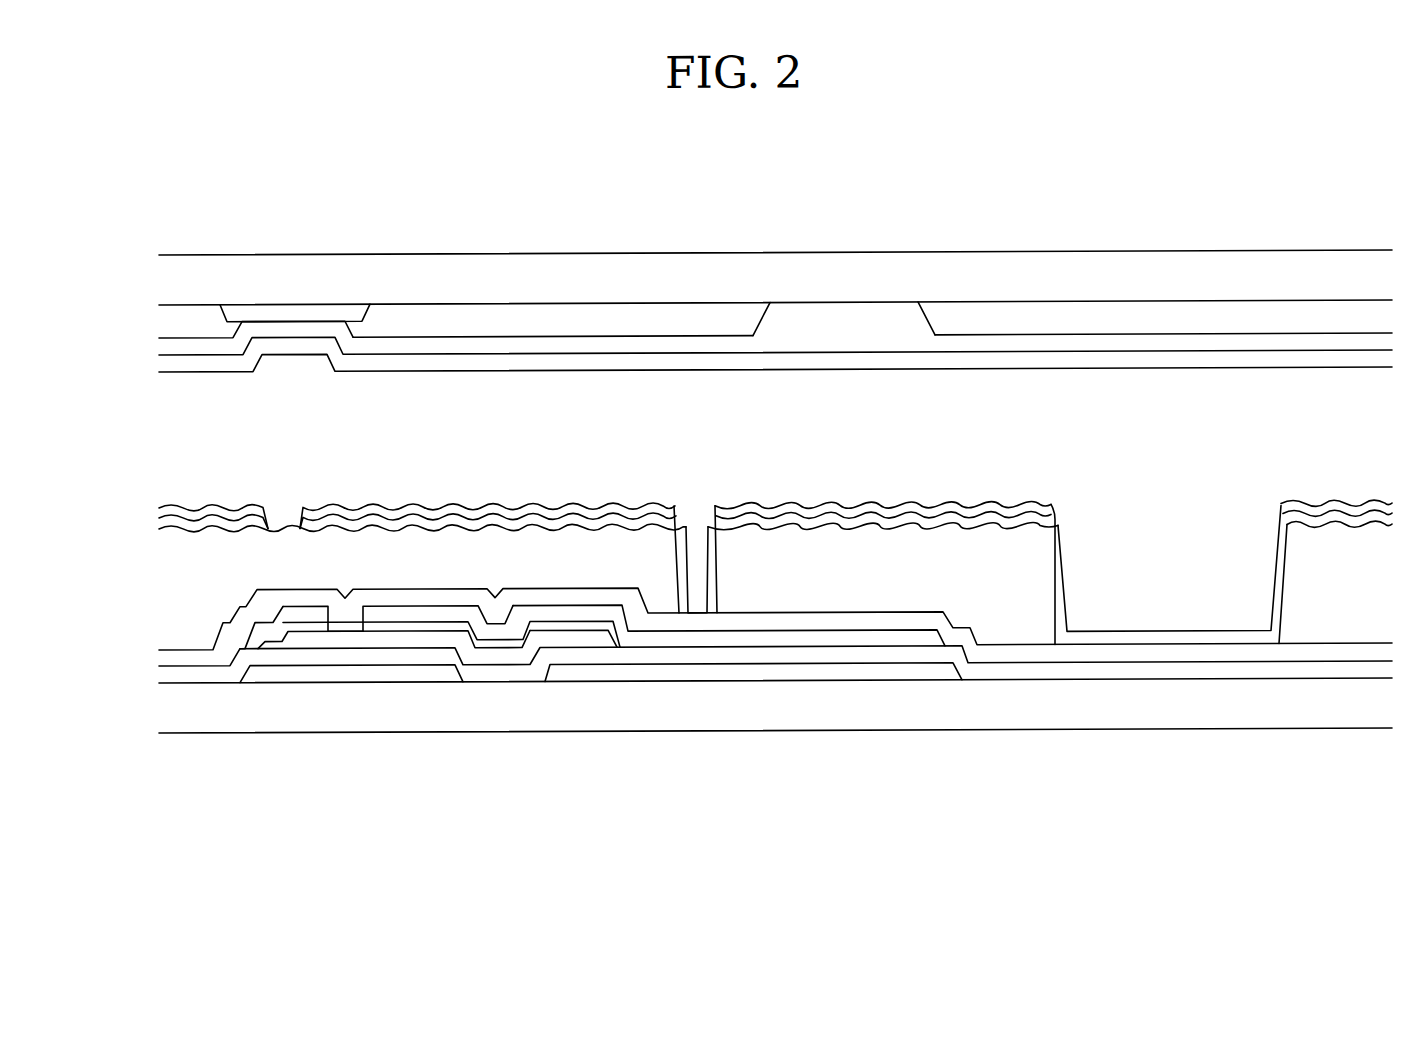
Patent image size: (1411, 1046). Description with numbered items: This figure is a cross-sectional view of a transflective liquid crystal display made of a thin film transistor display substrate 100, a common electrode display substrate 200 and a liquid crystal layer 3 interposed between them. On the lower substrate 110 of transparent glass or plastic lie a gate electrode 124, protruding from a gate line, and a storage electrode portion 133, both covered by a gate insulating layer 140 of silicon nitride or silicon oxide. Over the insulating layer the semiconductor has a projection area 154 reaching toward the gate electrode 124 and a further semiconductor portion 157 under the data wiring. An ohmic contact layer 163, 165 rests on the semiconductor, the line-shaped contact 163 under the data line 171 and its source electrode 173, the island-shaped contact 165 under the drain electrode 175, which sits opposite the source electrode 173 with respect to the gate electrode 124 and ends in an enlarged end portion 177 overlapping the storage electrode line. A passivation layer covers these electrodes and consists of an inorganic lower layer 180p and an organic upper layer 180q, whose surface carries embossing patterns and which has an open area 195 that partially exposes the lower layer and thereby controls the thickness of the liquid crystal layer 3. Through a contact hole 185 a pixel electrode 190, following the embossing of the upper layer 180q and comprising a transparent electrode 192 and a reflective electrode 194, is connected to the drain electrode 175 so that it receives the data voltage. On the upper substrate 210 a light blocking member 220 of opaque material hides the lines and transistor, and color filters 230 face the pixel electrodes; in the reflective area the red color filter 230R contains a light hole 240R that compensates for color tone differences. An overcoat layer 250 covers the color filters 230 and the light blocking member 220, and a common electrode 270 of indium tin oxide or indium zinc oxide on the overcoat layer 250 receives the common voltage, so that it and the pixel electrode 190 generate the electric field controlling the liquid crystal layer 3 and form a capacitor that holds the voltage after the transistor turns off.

The liquid crystal layer 3 is at (143, 380).
The thin film transistor display substrate 100 is at (143, 512).
The substrate 110 is at (1100, 722).
The gate electrode 124 is at (361, 678).
The storage electrode line 133 is at (867, 675).
The gate insulating layer 140 is at (993, 677).
The projection area 154 is at (337, 646).
The semiconductor stripe 157 is at (598, 647).
The ohmic contact layer 163 is at (283, 641).
The ohmic contact layer 165 is at (397, 631).
The data line 171 is at (237, 661).
The source electrode 173 is at (303, 621).
The drain electrode 175 is at (413, 618).
The enlarged end portion 177 is at (777, 643).
The lower layer 180p is at (293, 597).
The upper layer 180q is at (219, 557).
The contact hole 185 is at (693, 528).
The pixel electrode 190 is at (775, 465).
The transparent electrode 192 is at (592, 518).
The reflective electrode 194 is at (639, 518).
The open area 195 is at (1157, 527).
The common electrode display substrate 200 is at (143, 257).
The substrate 210 is at (342, 278).
The light blocking member 220 is at (270, 318).
The color filter 230 is at (184, 318).
The red color filter 230R is at (473, 319).
The light hole 240R is at (770, 320).
The overcoat layer 250 is at (698, 340).
The common electrode 270 is at (601, 362).